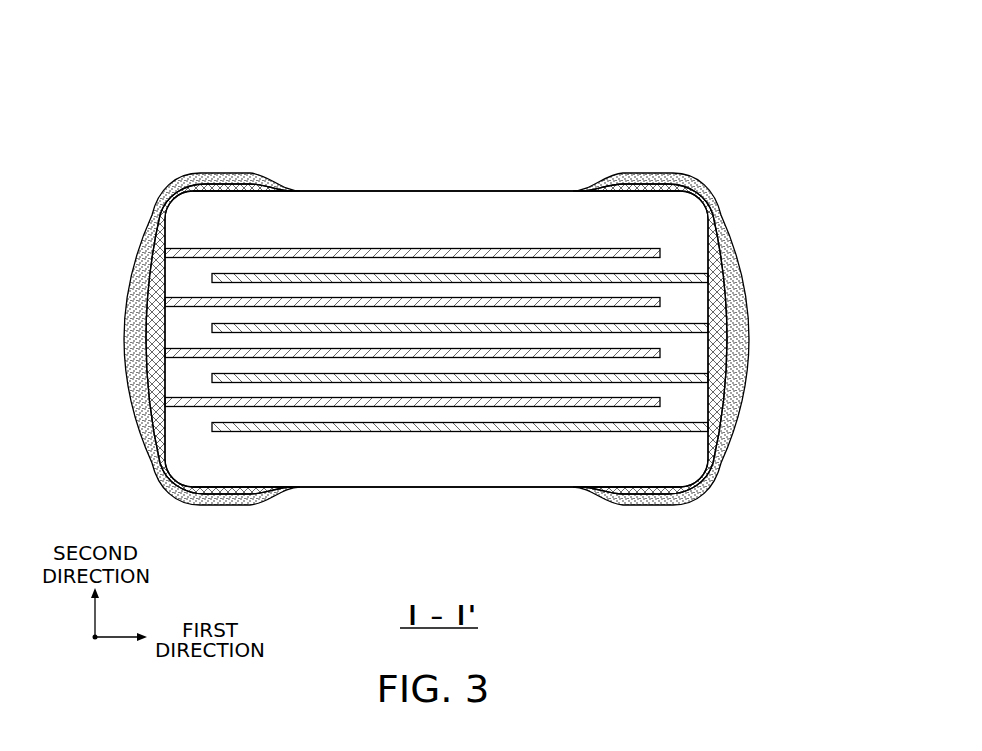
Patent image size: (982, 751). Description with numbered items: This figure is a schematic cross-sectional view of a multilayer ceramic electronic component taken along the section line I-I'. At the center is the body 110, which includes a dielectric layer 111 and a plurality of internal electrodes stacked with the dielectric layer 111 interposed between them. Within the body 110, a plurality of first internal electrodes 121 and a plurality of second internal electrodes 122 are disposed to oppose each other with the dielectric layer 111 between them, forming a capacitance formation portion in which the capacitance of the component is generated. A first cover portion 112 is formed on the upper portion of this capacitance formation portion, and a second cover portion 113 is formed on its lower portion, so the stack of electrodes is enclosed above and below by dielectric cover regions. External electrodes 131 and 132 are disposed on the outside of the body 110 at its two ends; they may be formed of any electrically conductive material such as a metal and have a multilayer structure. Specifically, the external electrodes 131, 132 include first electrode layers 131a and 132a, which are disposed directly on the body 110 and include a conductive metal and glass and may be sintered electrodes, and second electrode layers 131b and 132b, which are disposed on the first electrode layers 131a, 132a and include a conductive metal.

The body 110 is at (436, 332).
The dielectric layer 111 is at (458, 268).
The first cover portion 112 is at (303, 215).
The second cover portion 113 is at (391, 475).
The first internal electrode 121 is at (355, 253).
The second internal electrode 122 is at (403, 275).
The external electrode 131 is at (169, 255).
The first electrode layer 131a is at (150, 315).
The second electrode layer 131b is at (128, 345).
The external electrode 132 is at (706, 255).
The first electrode layer 132a is at (735, 318).
The second electrode layer 132b is at (748, 338).